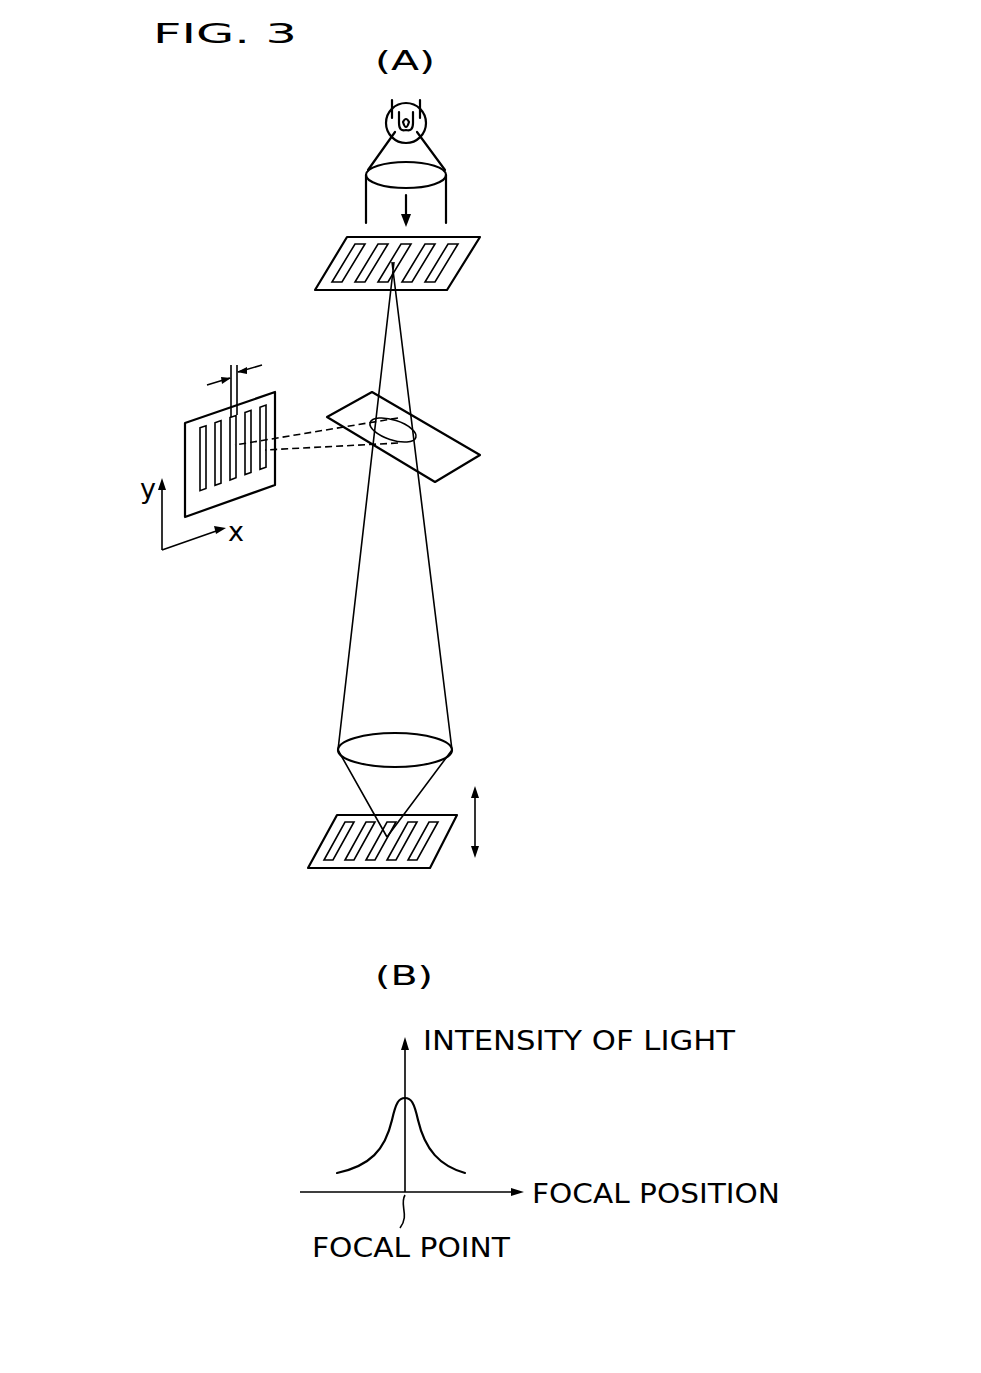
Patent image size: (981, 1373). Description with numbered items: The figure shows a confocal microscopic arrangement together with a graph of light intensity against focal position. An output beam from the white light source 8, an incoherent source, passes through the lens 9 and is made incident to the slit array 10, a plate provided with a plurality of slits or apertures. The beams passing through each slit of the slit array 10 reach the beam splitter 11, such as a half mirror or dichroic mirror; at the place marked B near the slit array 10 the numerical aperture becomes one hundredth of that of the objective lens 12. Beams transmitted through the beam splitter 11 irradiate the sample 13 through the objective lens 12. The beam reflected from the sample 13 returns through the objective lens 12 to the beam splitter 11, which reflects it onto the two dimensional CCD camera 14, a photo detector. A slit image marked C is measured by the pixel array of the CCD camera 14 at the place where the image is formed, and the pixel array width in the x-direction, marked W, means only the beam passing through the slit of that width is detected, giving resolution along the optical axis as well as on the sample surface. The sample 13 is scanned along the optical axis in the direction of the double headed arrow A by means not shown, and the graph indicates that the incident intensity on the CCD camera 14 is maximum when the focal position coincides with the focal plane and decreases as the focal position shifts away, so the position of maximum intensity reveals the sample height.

The white light source 8 is at (426, 117).
The lens 9 is at (433, 173).
The slit array 10 is at (463, 258).
The beam splitter 11 is at (457, 458).
The objective lens 12 is at (432, 750).
The sample 13 is at (418, 862).
The CCD camera 14 is at (197, 423).
The optical axis scanning direction A is at (477, 825).
The place of slit array B is at (405, 266).
The slit image C is at (235, 445).
The pixel array width W is at (234, 376).